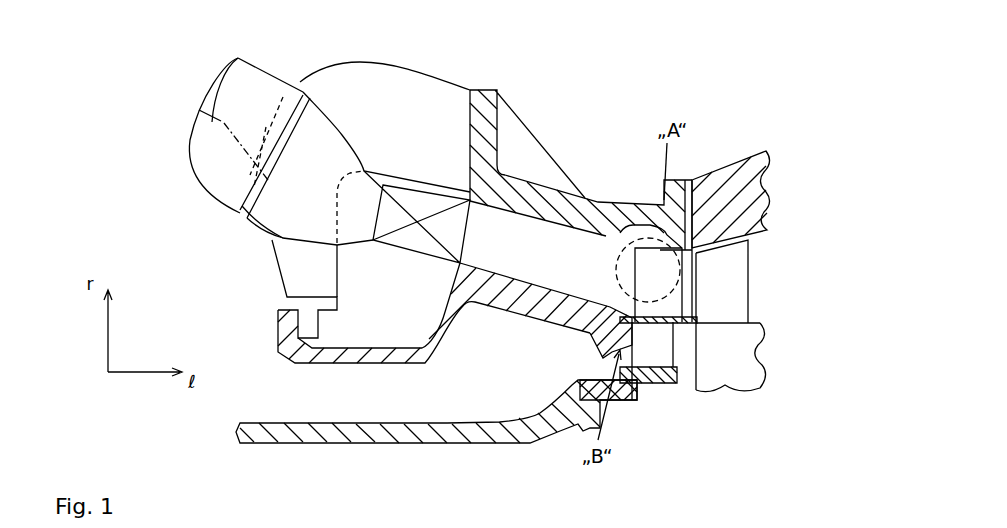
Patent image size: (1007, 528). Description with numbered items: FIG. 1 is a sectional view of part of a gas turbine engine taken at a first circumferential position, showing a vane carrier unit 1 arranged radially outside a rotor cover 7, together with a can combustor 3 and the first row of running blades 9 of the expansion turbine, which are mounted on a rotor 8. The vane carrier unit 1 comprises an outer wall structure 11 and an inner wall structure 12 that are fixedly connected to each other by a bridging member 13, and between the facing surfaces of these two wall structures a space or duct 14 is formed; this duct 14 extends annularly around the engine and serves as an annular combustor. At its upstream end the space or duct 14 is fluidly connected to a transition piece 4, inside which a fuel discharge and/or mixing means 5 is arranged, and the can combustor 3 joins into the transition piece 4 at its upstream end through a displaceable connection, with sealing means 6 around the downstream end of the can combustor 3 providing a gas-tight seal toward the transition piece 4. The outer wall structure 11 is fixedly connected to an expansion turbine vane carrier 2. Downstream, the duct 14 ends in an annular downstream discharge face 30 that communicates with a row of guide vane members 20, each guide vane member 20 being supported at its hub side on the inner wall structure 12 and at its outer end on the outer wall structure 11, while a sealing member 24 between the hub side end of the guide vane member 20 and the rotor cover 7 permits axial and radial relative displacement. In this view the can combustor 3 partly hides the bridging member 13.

The vane carrier unit 1 is at (537, 123).
The expansion turbine vane carrier 2 is at (725, 165).
The can combustor 3 is at (228, 115).
The transition piece 4 is at (280, 238).
The fuel discharge and/or mixing means 5 is at (413, 253).
The sealing means 6 is at (240, 211).
The rotor cover 7 is at (448, 425).
The rotor 8 is at (728, 377).
The running blades 9 is at (748, 272).
The outer wall structure 11 is at (598, 202).
The inner wall structure 12 is at (533, 317).
The bridging member 13 is at (307, 78).
The space or duct 14 is at (557, 269).
The guide vane member 20 is at (638, 298).
The sealing member 24 is at (675, 353).
The annular downstream discharge face 30 is at (615, 237).